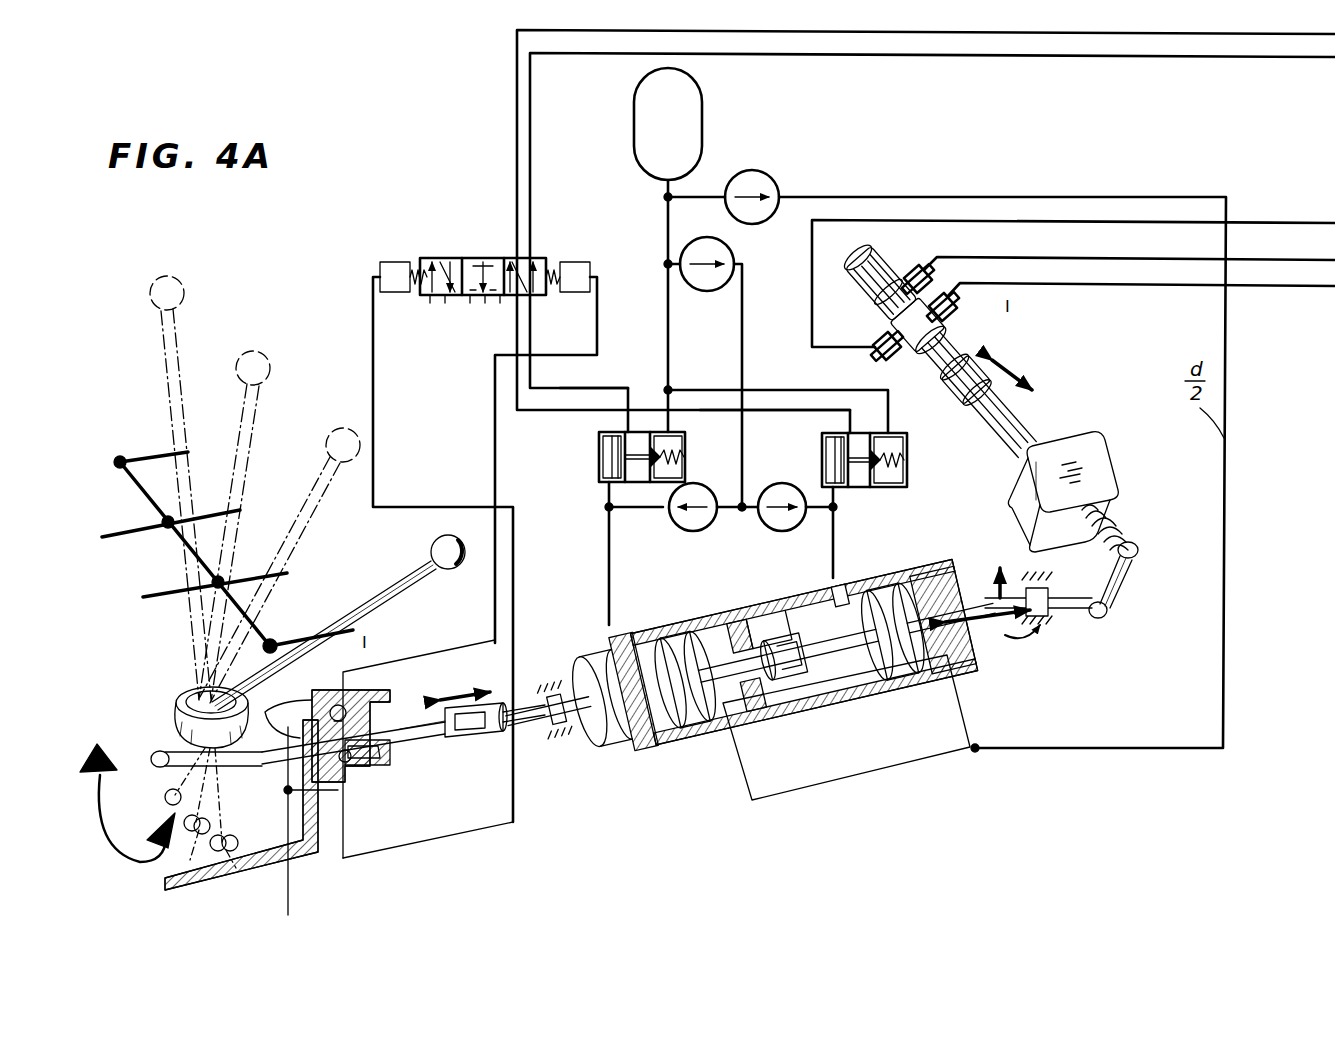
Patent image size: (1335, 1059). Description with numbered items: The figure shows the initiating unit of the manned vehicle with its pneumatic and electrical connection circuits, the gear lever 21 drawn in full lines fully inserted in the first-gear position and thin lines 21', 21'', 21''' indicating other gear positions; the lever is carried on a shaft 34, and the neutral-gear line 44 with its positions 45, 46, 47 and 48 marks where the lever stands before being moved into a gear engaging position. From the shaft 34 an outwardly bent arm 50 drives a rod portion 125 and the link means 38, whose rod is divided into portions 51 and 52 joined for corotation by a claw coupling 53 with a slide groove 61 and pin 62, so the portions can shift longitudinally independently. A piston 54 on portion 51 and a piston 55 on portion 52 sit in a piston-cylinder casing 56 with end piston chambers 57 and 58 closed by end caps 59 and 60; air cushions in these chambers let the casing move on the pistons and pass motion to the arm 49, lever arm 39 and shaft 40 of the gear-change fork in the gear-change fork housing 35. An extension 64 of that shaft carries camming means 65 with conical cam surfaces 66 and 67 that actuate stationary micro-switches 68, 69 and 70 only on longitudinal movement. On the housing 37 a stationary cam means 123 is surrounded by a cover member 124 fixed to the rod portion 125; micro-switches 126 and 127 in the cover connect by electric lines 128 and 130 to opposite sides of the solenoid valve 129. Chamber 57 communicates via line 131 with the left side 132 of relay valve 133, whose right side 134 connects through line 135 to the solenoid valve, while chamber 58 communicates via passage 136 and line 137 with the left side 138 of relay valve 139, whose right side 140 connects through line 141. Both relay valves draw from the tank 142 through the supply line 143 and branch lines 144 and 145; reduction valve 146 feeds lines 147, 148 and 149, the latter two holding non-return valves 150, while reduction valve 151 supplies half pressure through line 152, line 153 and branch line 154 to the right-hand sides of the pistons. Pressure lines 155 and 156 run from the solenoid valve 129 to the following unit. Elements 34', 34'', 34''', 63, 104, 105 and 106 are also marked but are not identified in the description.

The gear lever 21 is at (338, 622).
The gear lever position 21' is at (280, 554).
The gear lever position 21'' is at (234, 498).
The gear lever position 21''' is at (180, 458).
The shaft 34 is at (180, 717).
The ball lever position 34' is at (161, 789).
The ball lever position 34'' is at (190, 830).
The ball lever position 34''' is at (245, 828).
The gear-change fork housing 35 is at (1078, 472).
The housing 37 is at (318, 848).
The link means 38 is at (752, 671).
The lever arm 39 is at (1118, 590).
The shaft 40 is at (1140, 552).
The neutral-gear line 44 is at (135, 493).
The position 45 is at (277, 640).
The position 46 is at (232, 574).
The position 47 is at (166, 530).
The position 48 is at (120, 455).
The arm 49 is at (1072, 618).
The arm 50 is at (165, 768).
The link portion 51 is at (572, 670).
The link portion 52 is at (958, 650).
The claw coupling 53 is at (815, 672).
The piston 54 is at (680, 628).
The piston 55 is at (884, 675).
The piston-cylinder casing 56 is at (740, 712).
The piston chamber 57 is at (636, 640).
The piston chamber 58 is at (855, 582).
The end cap 59 is at (622, 730).
The end cap 60 is at (925, 585).
The slide groove 61 is at (732, 622).
The pin 62 is at (788, 695).
The chamber 63 is at (765, 605).
The extension 64 is at (1012, 438).
The camming means 65 is at (885, 302).
The cam surface 66 is at (905, 327).
The cam surface 67 is at (875, 268).
The micro-switch 68 is at (884, 360).
The micro-switch 69 is at (960, 316).
The micro-switch 70 is at (916, 266).
The hydraulic line 104 is at (1306, 285).
The hydraulic line 105 is at (1306, 258).
The hydraulic line 106 is at (1322, 221).
The cam means 123 is at (372, 700).
The cover member 124 is at (398, 766).
The rod portion 125 is at (372, 778).
The micro-switch 126 is at (362, 790).
The micro-switch 127 is at (338, 705).
The electric line 128 is at (478, 840).
The solenoid valve 129 is at (450, 258).
The electrical line 130 is at (480, 640).
The line 131 is at (609, 600).
The left side 132 is at (599, 470).
The relay valve 133 is at (678, 452).
The right side 134 is at (612, 442).
The line 135 is at (600, 388).
The passage 136 is at (833, 575).
The line 137 is at (833, 555).
The left side 138 is at (826, 452).
The relay valve 139 is at (907, 484).
The right side 140 is at (862, 484).
The line 141 is at (785, 412).
The tank 142 is at (702, 115).
The supply line 143 is at (668, 320).
The branch line 144 is at (742, 490).
The branch line 145 is at (815, 390).
The reduction valve 146 is at (732, 250).
The line 147 is at (742, 345).
The line 148 is at (740, 513).
The line 149 is at (758, 500).
The non-return valves 150 is at (685, 531).
The reduction valve 151 is at (770, 178).
The line 152 is at (1078, 200).
The line 153 is at (895, 780).
The branch line 154 is at (968, 716).
The pressure line 155 is at (530, 103).
The pressure line 156 is at (517, 134).